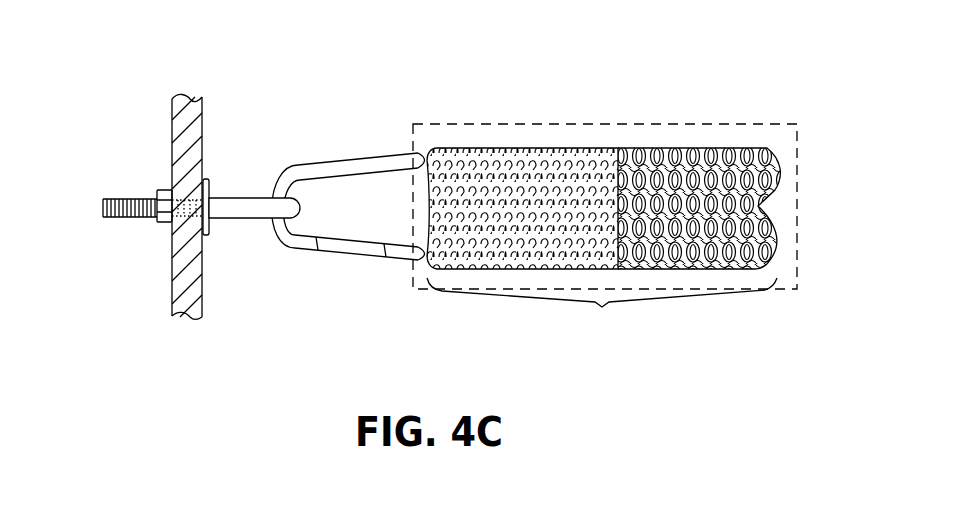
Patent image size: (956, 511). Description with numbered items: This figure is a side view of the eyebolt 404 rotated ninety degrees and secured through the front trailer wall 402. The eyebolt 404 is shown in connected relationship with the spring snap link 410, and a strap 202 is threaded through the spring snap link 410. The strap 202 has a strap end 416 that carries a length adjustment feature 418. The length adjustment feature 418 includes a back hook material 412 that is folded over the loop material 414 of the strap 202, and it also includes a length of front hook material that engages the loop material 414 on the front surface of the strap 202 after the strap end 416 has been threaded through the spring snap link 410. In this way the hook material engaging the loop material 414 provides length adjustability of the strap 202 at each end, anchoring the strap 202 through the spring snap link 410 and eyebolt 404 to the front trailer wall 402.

The strap 202 is at (647, 110).
The front trailer wall 402 is at (174, 142).
The eyebolt 404 is at (243, 197).
The spring snap link 410 is at (348, 158).
The back hook material 412 is at (555, 147).
The loop material 414 is at (725, 270).
The strap end 416 is at (602, 315).
The length adjustment feature 418 is at (769, 123).